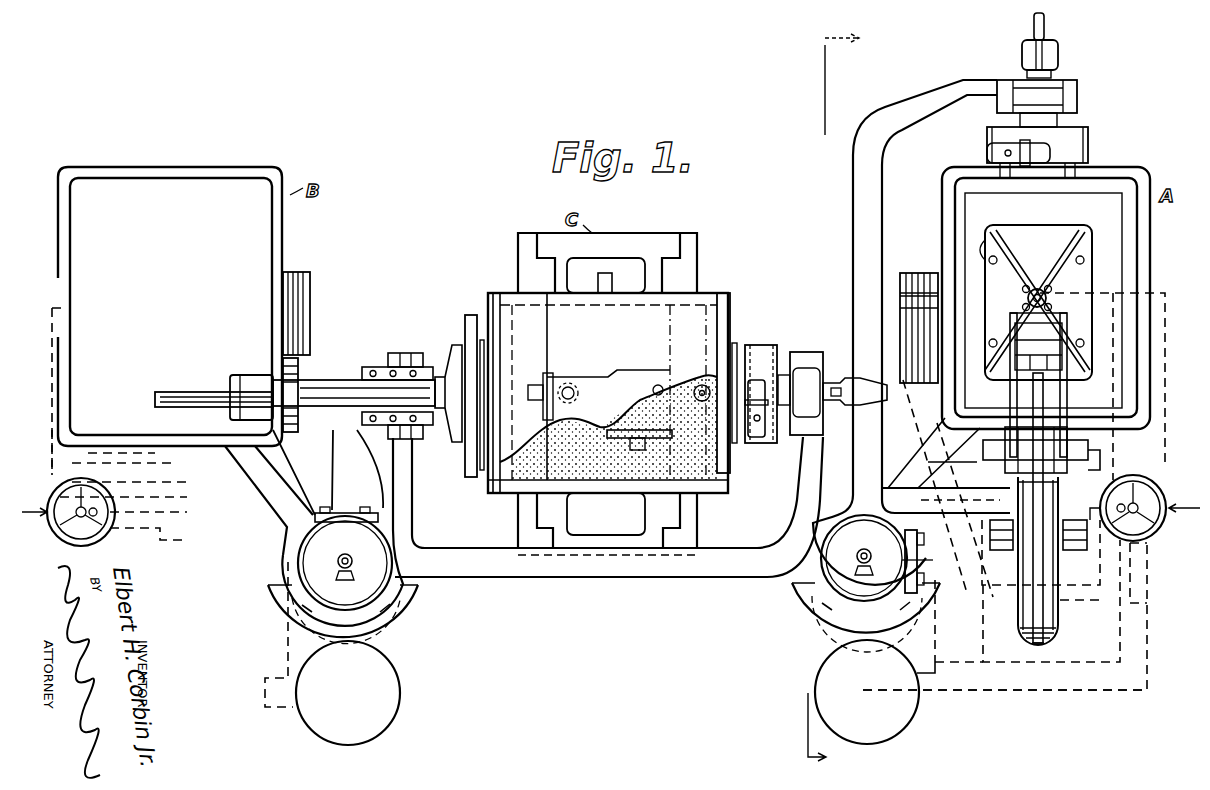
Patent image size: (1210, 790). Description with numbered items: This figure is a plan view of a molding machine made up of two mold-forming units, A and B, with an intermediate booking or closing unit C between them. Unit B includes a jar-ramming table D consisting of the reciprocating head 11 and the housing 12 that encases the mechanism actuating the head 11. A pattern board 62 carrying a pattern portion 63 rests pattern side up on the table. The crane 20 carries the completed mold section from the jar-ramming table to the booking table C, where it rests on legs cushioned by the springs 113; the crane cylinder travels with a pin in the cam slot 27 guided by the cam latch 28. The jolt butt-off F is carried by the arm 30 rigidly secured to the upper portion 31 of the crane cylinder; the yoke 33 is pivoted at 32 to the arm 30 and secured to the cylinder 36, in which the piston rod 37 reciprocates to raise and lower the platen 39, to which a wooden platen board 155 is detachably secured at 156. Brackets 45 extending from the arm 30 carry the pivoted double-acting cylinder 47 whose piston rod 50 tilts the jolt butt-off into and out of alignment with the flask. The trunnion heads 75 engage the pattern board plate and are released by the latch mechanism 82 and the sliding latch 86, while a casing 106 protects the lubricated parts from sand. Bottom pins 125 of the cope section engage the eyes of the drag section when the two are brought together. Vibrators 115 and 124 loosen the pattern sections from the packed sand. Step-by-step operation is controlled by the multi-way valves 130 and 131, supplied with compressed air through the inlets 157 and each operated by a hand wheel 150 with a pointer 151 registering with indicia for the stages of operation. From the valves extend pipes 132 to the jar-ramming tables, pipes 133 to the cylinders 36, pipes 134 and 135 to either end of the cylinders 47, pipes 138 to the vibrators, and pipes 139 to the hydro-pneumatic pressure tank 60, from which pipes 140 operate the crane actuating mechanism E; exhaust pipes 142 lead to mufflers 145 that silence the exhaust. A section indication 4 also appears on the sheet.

The reciprocating head 11 is at (170, 306).
The section line 4 is at (818, 400).
The housing 12 is at (283, 528).
The crane 20 is at (412, 523).
The cam slot 27 is at (840, 620).
The cam latch 28 is at (295, 608).
The arm or bracket 30 is at (345, 455).
The upper portion of the cylinder 31 is at (615, 558).
The pivot 32 is at (1012, 473).
The yoke 33 is at (1010, 390).
The cylinder 36 is at (345, 367).
The piston rod 37 is at (210, 392).
The platen 39 is at (462, 350).
The brackets 45 is at (1038, 545).
The cylinder 47 is at (252, 375).
The piston rod 50 is at (1043, 398).
The pressure tank 60 is at (365, 738).
The pattern board 62 is at (608, 393).
The pattern 63 is at (639, 430).
The trunnion heads 75 is at (770, 340).
The latch mechanism 82 is at (845, 380).
The latch 86 is at (760, 437).
The casing 106 is at (1075, 72).
The springs 113 is at (700, 280).
The vibrator 115 is at (607, 273).
The vibrator 124 is at (900, 296).
The bottom pins 125 is at (503, 388).
The multi-way valve 130 is at (100, 540).
The multi-way valve 131 is at (1150, 530).
The pipes 132 is at (1180, 294).
The pipes 133 is at (1105, 288).
The pipe 134 is at (1100, 470).
The pipe 135 is at (1083, 624).
The pipes 138 is at (1045, 568).
The pipes 139 is at (1033, 690).
The pipes 140 is at (935, 673).
The exhaust pipes 142 is at (1022, 662).
The mufflers 145 is at (297, 318).
The hand wheel 150 is at (1138, 483).
The pointer 151 is at (1159, 560).
The wooden platen board 155 is at (482, 340).
The securing point 156 is at (985, 252).
The inlets 157 is at (611, 498).